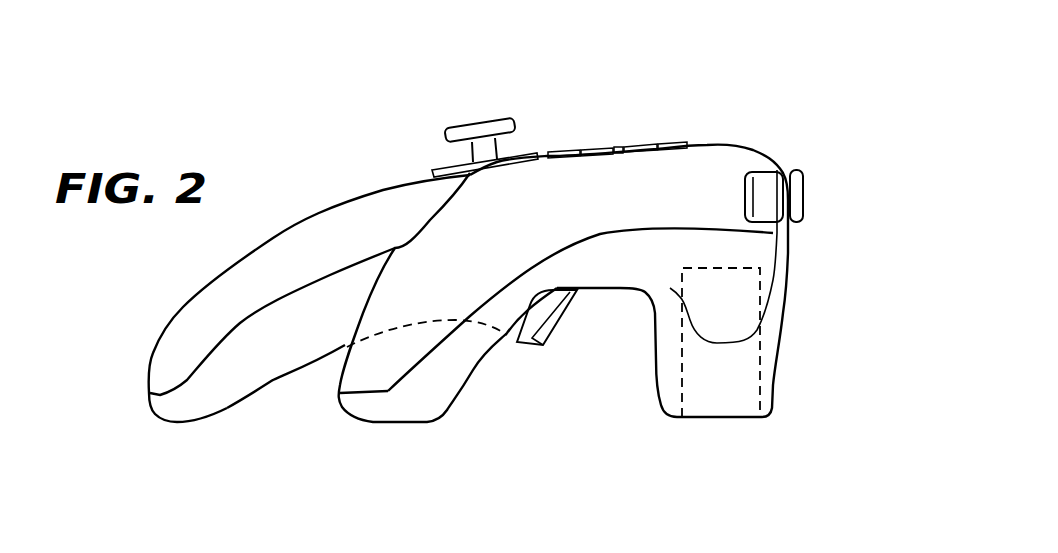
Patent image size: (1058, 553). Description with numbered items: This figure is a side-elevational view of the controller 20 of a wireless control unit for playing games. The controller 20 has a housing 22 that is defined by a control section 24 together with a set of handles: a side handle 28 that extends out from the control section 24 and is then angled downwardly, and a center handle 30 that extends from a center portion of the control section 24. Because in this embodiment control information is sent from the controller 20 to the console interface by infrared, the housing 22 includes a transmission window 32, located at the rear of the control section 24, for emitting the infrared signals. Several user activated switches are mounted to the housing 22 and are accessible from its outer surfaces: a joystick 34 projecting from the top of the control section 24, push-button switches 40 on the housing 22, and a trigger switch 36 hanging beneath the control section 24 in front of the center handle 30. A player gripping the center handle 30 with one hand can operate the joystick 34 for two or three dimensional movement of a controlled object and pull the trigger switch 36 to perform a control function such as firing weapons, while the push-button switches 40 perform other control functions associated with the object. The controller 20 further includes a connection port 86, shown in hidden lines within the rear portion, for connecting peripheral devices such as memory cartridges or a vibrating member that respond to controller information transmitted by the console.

The controller 20 is at (673, 108).
The housing 22 is at (320, 205).
The control section 24 is at (717, 143).
The right side handle 28 is at (407, 410).
The center handle 30 is at (192, 404).
The transmission window 32 is at (793, 210).
The joystick 34 is at (478, 122).
The trigger switch 36 is at (553, 327).
The push-button switches 40 is at (778, 190).
The connection port 86 is at (727, 407).